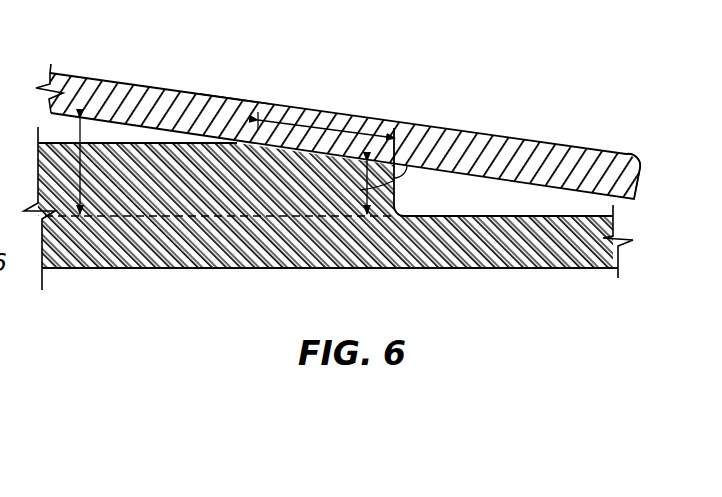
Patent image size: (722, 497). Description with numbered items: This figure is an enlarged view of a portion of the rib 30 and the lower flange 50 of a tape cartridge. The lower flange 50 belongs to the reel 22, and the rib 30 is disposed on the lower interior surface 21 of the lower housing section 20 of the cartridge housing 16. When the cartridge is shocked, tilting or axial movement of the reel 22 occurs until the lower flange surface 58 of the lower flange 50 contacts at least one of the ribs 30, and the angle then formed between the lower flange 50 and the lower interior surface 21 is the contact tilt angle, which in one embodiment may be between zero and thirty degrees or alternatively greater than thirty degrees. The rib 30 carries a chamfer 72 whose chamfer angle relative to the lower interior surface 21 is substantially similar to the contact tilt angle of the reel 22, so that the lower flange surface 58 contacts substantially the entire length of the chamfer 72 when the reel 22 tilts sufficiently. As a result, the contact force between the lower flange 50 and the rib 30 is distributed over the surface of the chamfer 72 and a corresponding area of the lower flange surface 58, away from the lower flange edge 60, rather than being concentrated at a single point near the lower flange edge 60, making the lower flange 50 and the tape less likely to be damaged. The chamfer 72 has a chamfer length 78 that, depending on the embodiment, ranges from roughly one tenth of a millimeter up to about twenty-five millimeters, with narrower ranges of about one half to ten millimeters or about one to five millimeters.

The cartridge housing 16 is at (258, 270).
The lower flange 50 is at (150, 86).
The reel 22 is at (240, 98).
The chamfer length 78 is at (343, 119).
The lower flange edge 60 is at (638, 192).
The lower interior surface 21 is at (447, 217).
The chamfer 72 is at (340, 158).
The rib 30 is at (250, 164).
The lower flange surface 58 is at (177, 132).
The lower housing section 20 is at (80, 253).